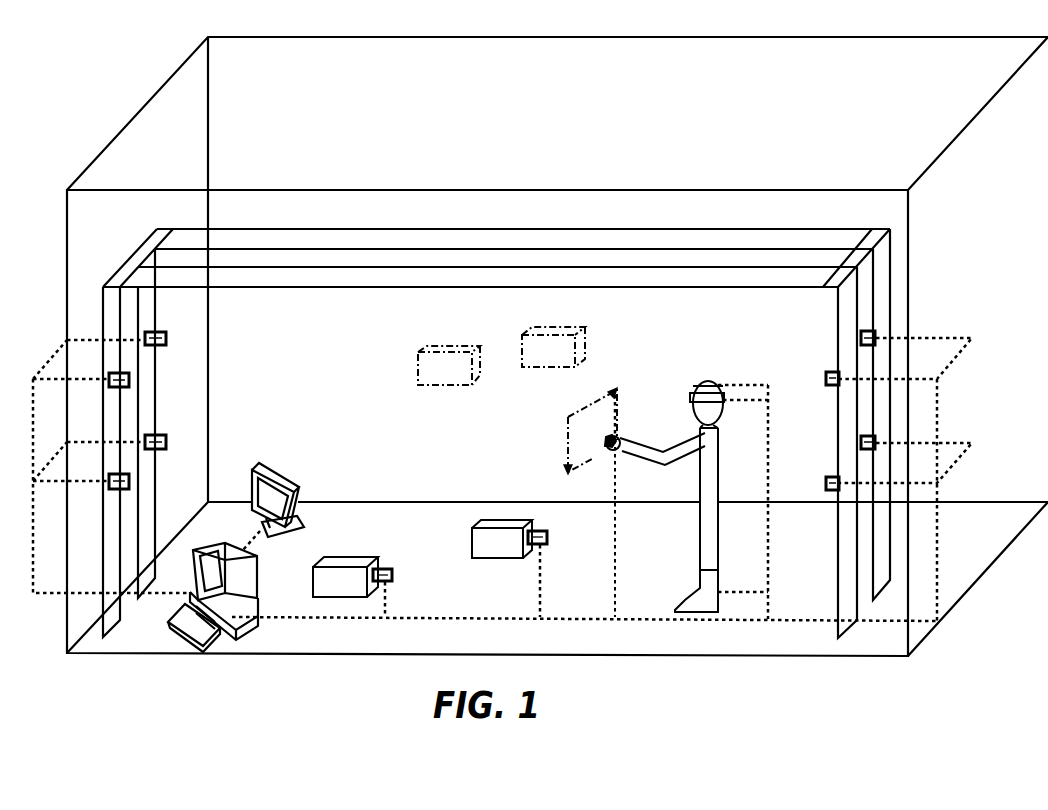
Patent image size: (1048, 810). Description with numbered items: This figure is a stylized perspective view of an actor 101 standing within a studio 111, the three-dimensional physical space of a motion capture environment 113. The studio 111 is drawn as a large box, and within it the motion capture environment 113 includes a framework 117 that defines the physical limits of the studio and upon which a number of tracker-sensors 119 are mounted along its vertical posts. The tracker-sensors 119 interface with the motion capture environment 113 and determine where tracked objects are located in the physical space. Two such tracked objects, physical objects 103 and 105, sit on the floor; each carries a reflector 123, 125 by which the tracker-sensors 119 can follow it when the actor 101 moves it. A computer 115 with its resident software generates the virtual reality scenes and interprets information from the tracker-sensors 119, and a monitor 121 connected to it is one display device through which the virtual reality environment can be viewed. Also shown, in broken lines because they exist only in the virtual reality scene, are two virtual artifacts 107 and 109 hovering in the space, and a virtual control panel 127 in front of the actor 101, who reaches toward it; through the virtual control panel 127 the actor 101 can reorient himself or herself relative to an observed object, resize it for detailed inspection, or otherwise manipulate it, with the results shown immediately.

The actor 101 is at (706, 519).
The physical object 103 is at (332, 560).
The physical object 105 is at (502, 548).
The virtual artifact 107 is at (417, 365).
The virtual artifact 109 is at (530, 332).
The studio 111 is at (292, 188).
The motion capture environment 113 is at (773, 152).
The computer 115 is at (225, 618).
The framework 117 is at (392, 236).
The tracker-sensors 119 is at (130, 481).
The monitor 121 is at (283, 473).
The reflector 123 is at (383, 567).
The reflector 125 is at (538, 528).
The virtual control panel 127 is at (568, 433).